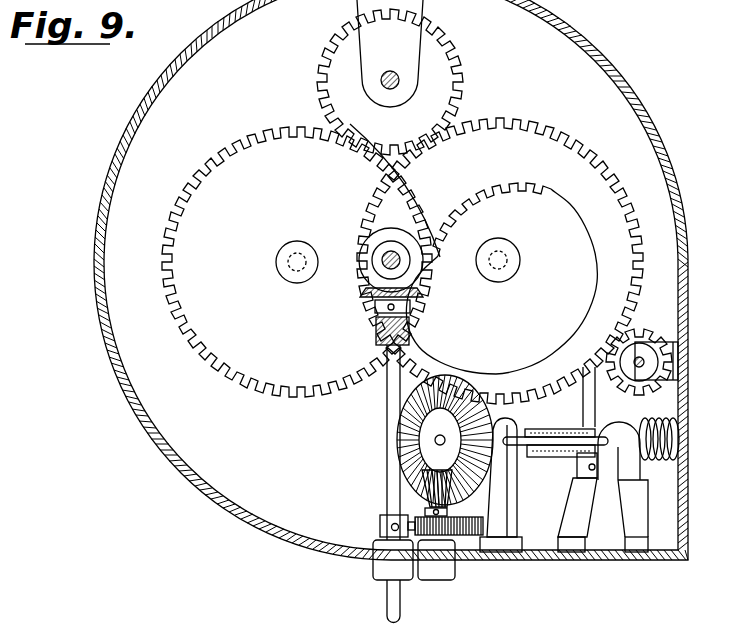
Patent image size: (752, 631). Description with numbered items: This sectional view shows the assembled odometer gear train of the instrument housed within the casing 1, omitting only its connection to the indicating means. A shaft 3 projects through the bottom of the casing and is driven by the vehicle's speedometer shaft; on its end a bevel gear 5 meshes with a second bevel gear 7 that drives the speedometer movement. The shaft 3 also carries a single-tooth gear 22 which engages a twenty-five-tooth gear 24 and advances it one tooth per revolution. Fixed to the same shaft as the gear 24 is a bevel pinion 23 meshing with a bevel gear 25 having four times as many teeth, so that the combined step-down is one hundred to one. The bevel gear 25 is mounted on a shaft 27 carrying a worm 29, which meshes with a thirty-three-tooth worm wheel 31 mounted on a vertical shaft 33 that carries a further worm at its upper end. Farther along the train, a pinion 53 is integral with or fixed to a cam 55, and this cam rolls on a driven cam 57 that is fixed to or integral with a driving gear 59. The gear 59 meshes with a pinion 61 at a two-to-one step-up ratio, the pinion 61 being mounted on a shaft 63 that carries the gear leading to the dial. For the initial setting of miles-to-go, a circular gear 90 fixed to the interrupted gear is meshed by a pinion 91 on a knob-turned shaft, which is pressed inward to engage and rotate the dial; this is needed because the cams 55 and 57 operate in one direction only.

The casing 1 is at (628, 83).
The shaft 3 is at (387, 416).
The bevel gear 5 is at (365, 296).
The second bevel gear 7 is at (390, 229).
The single-tooth gear 22 is at (380, 525).
The bevel pinion 23 is at (422, 497).
The 25-tooth gear 24 is at (482, 536).
The bevel gear 25 is at (477, 400).
The shaft 27 is at (558, 448).
The worm 29 is at (659, 450).
The worm wheel 31 is at (569, 436).
The vertical shaft 33 is at (597, 398).
The pinion 53 is at (470, 199).
The cam 55 is at (508, 273).
The driven cam 57 is at (425, 196).
The gear 59 is at (312, 396).
The pinion 61 is at (407, 77).
The shaft 63 is at (400, 63).
The circular gear 90 is at (634, 207).
The pinion 91 is at (640, 336).